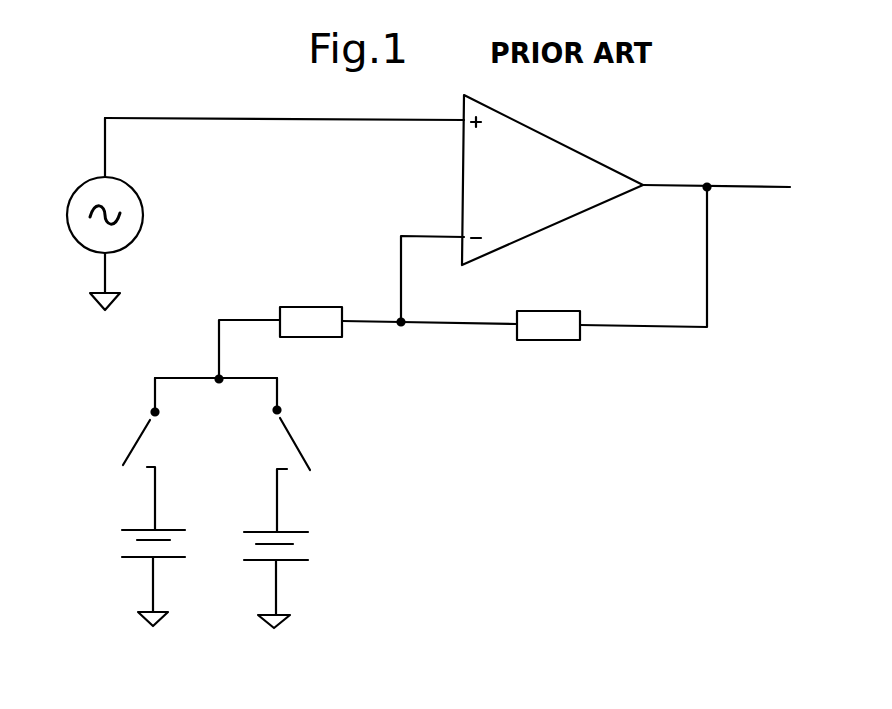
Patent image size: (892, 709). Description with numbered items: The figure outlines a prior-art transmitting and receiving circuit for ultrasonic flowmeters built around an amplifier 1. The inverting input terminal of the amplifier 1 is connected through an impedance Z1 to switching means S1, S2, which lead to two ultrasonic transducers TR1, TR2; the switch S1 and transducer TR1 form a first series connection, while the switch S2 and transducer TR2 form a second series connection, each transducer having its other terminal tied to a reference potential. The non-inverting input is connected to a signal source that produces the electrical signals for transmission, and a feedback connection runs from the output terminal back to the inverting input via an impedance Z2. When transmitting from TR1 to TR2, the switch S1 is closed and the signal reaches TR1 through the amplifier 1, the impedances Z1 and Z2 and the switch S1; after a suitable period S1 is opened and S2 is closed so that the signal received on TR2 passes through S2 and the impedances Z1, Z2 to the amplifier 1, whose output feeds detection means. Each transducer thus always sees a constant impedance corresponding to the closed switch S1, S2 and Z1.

The amplifier 1 is at (527, 194).
The impedance Z1 is at (311, 304).
The impedance Z2 is at (548, 308).
The switching means S1 is at (120, 454).
The switching means S2 is at (311, 455).
The ultrasonic transducer TR1 is at (128, 578).
The ultrasonic transducer TR2 is at (305, 580).